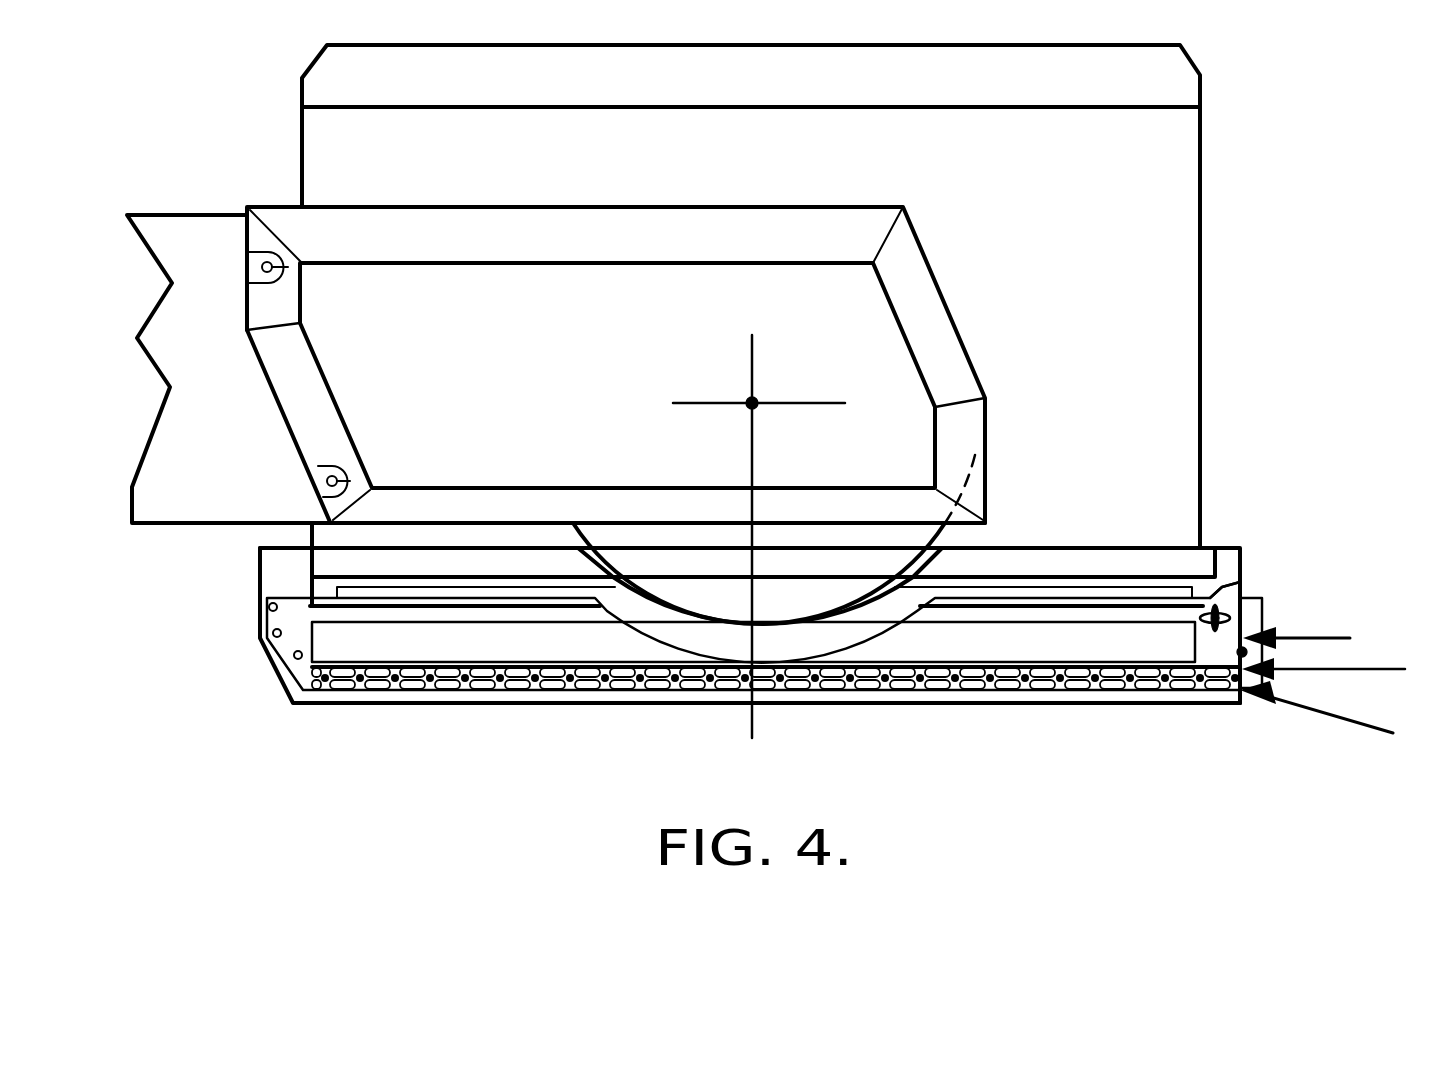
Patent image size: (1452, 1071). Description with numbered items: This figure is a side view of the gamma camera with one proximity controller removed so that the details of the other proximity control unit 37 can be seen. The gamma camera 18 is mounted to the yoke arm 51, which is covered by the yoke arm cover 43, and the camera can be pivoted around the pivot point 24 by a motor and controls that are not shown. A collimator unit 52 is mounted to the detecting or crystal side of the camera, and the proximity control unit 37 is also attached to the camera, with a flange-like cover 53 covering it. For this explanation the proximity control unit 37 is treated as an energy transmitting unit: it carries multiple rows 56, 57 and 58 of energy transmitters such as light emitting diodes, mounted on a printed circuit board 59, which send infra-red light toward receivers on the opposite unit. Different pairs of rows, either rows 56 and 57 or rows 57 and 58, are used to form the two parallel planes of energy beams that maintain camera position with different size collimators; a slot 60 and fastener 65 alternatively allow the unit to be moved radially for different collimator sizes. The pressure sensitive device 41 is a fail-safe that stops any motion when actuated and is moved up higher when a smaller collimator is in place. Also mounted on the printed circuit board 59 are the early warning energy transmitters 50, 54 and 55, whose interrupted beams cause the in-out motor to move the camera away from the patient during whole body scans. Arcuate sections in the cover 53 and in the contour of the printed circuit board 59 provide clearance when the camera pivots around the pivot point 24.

The gamma camera 18 is at (1098, 262).
The pivot point 24 is at (762, 392).
The proximity control unit 37 is at (1321, 639).
The pressure sensitive device 41 is at (1168, 643).
The yoke arm cover 43 is at (769, 325).
The early warning energy transmitter 50 is at (268, 604).
The yoke arm 51 is at (170, 228).
The collimator unit 52 is at (1235, 572).
The flange-like cover 53 is at (1240, 547).
The early warning energy transmitter 54 is at (272, 638).
The early warning energy transmitter 55 is at (294, 660).
The row of energy transmitters 56 is at (1346, 671).
The row of energy transmitters 57 is at (1339, 725).
The row of energy transmitters 58 is at (1240, 700).
The printed circuit board 59 is at (1243, 620).
The slot 60 is at (1230, 596).
The fastener 65 is at (1222, 612).